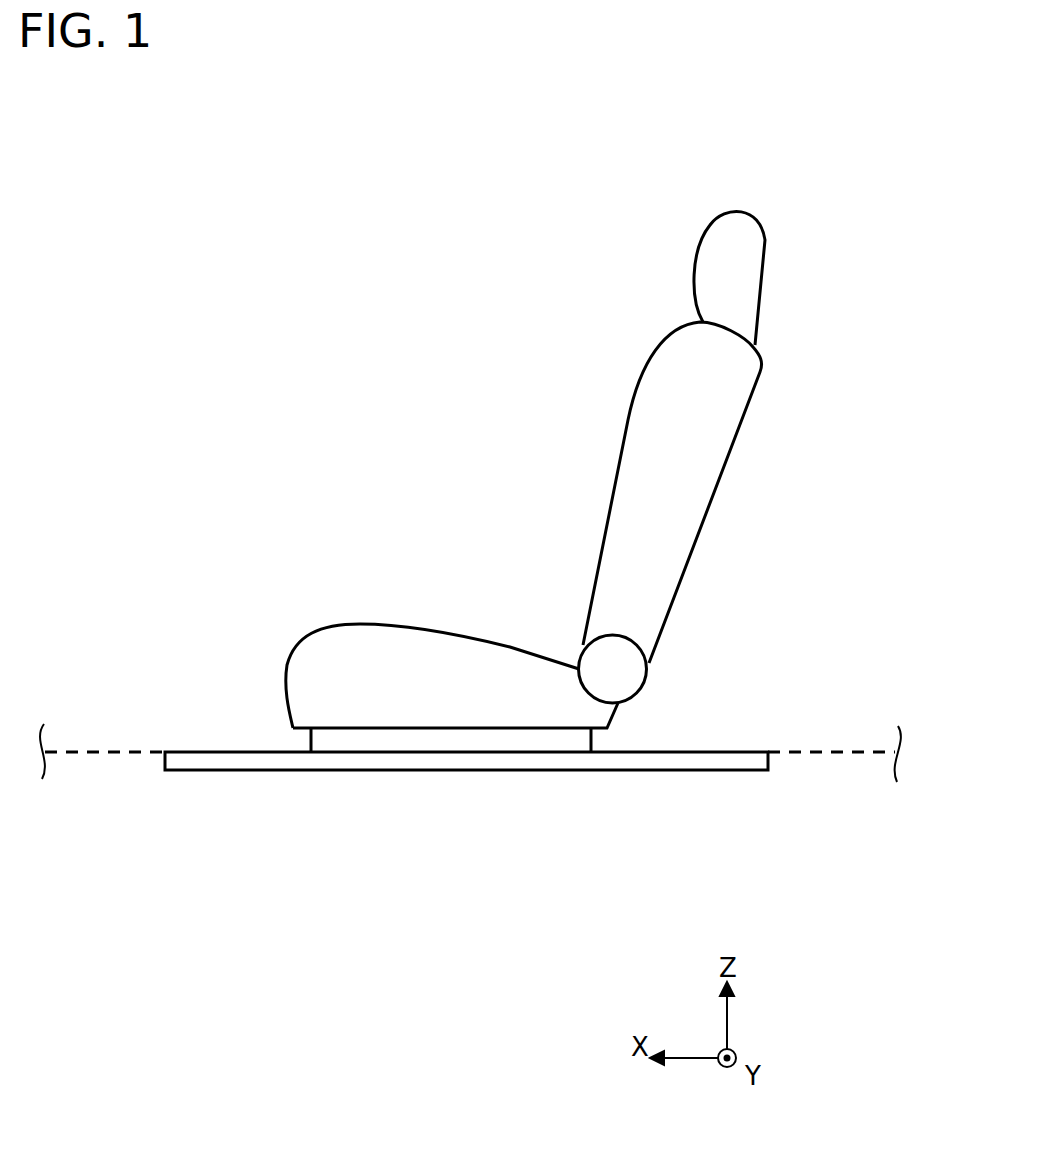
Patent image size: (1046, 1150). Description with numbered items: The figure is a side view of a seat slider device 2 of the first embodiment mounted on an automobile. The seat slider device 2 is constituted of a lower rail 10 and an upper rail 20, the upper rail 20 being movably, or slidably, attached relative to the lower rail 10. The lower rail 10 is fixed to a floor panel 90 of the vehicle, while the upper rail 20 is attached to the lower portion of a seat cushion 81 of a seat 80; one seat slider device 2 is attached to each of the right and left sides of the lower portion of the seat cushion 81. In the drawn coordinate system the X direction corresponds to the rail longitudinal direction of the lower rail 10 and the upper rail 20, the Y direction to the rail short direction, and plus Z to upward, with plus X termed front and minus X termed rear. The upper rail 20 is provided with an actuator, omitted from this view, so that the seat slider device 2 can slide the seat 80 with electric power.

The seat 80 is at (551, 432).
The seat cushion 81 is at (432, 637).
The floor panel 90 is at (840, 748).
The lower rail 10 is at (384, 763).
The upper rail 20 is at (442, 740).
The seat slider device 2 is at (525, 893).